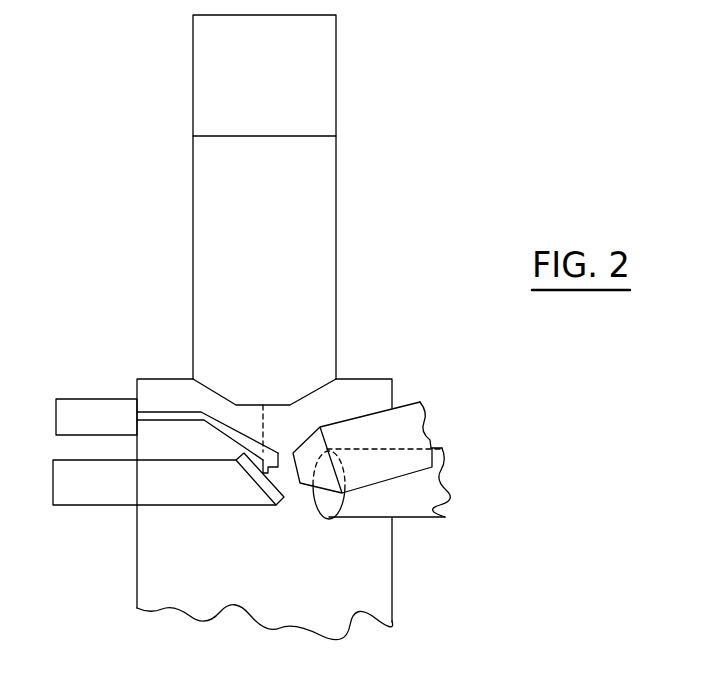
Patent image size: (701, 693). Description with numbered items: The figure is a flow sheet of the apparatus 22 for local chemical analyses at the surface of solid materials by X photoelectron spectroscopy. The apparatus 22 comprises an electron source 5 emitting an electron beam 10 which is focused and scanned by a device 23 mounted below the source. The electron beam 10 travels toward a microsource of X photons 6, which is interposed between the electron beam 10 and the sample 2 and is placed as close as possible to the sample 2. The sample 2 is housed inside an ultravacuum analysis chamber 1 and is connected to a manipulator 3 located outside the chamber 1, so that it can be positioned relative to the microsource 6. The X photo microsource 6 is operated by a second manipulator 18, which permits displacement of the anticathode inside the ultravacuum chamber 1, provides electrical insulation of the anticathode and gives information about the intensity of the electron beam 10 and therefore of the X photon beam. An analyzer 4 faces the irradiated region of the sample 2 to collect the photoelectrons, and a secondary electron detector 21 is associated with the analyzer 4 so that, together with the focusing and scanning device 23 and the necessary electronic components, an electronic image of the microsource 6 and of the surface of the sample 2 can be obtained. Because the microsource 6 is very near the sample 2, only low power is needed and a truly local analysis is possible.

The ultravacuum analysis chamber 1 is at (267, 582).
The sample 2 is at (265, 482).
The manipulator 3 is at (82, 492).
The analyzer 4 is at (407, 430).
The electron source 5 is at (312, 77).
The microsource of X photons 6 is at (277, 457).
The electron beam 10 is at (264, 430).
The manipulator 18 is at (85, 417).
The secondary electron detector 21 is at (420, 497).
The apparatus 22 is at (129, 323).
The device for focusing and scanning the electron beam 23 is at (312, 250).